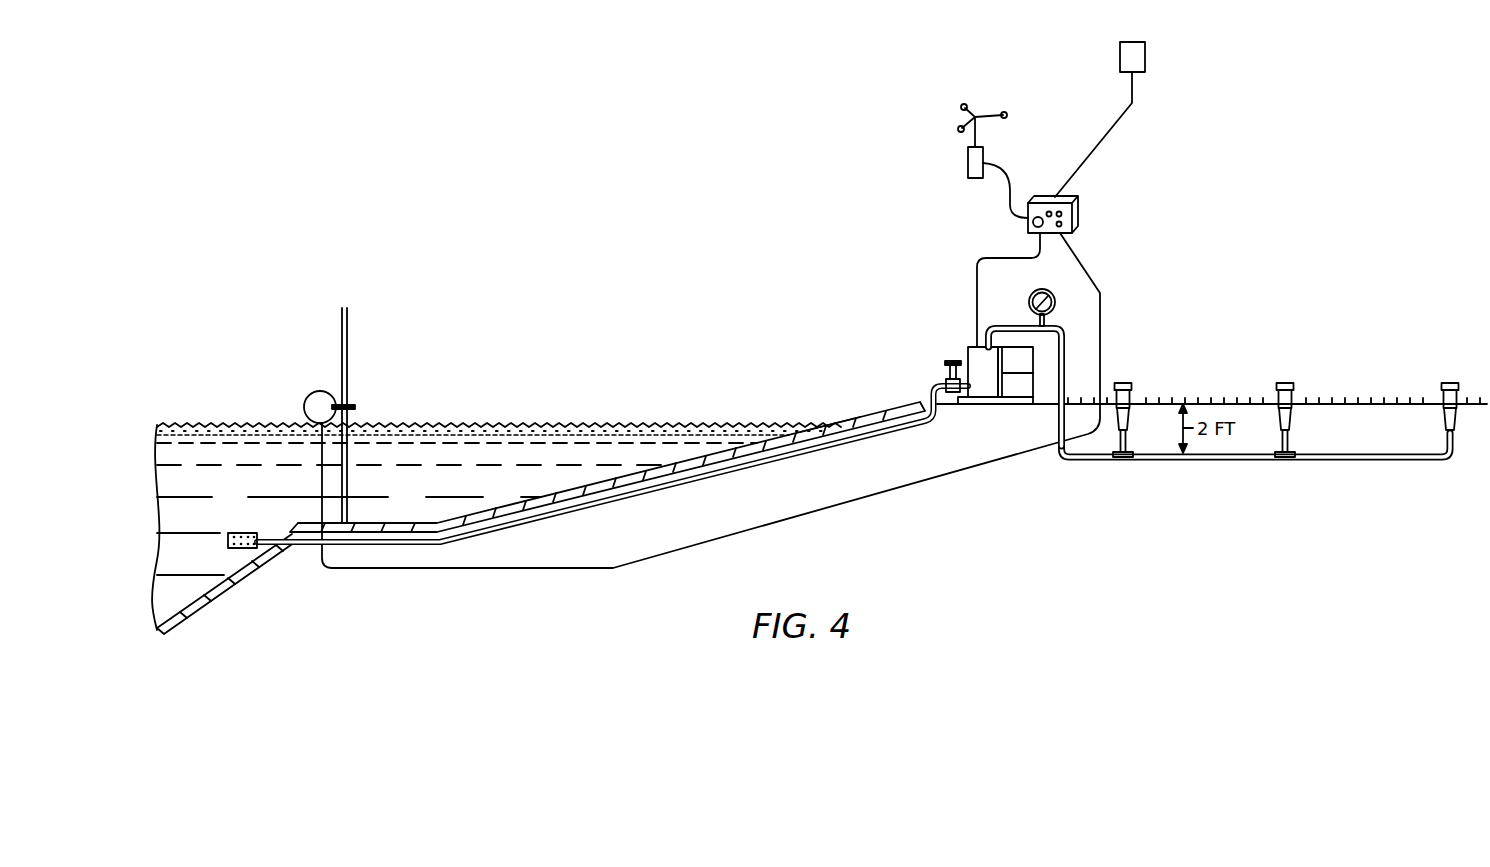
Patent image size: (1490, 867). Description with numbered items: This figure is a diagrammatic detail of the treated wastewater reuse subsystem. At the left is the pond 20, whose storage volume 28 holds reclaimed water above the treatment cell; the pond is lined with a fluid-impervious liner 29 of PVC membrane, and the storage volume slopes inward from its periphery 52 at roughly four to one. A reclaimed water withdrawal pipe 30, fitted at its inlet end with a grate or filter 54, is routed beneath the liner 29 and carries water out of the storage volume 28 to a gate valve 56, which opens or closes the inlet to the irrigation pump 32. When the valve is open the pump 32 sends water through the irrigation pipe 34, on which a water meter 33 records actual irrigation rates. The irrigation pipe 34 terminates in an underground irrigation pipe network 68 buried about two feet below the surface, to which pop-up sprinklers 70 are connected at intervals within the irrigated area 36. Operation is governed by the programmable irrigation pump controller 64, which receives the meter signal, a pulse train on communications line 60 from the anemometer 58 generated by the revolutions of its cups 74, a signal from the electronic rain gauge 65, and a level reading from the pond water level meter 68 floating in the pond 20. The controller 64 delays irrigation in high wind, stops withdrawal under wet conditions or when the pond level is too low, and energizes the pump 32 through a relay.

The pond 20 is at (513, 413).
The storage volume 28 is at (394, 504).
The fluid-impervious liner 29 is at (508, 505).
The reclaimed water discharge pipe 30 is at (780, 460).
The irrigation pump 32 is at (968, 347).
The water meter 33 is at (1057, 298).
The irrigation pipe 34 is at (1012, 325).
The irrigated area 36 is at (1296, 489).
The periphery 52 is at (825, 430).
The intake screen 54 is at (240, 533).
The gate valve 56 is at (947, 360).
The anemometer 58 is at (967, 165).
The communications line 60 is at (1010, 208).
The irrigation pump controller 64 is at (1080, 212).
The electronic rain gauge 65 is at (1147, 55).
The pond water level meter 68 is at (355, 407).
The pop-up sprinklers 70 is at (1123, 383).
The cups 74 is at (1005, 110).